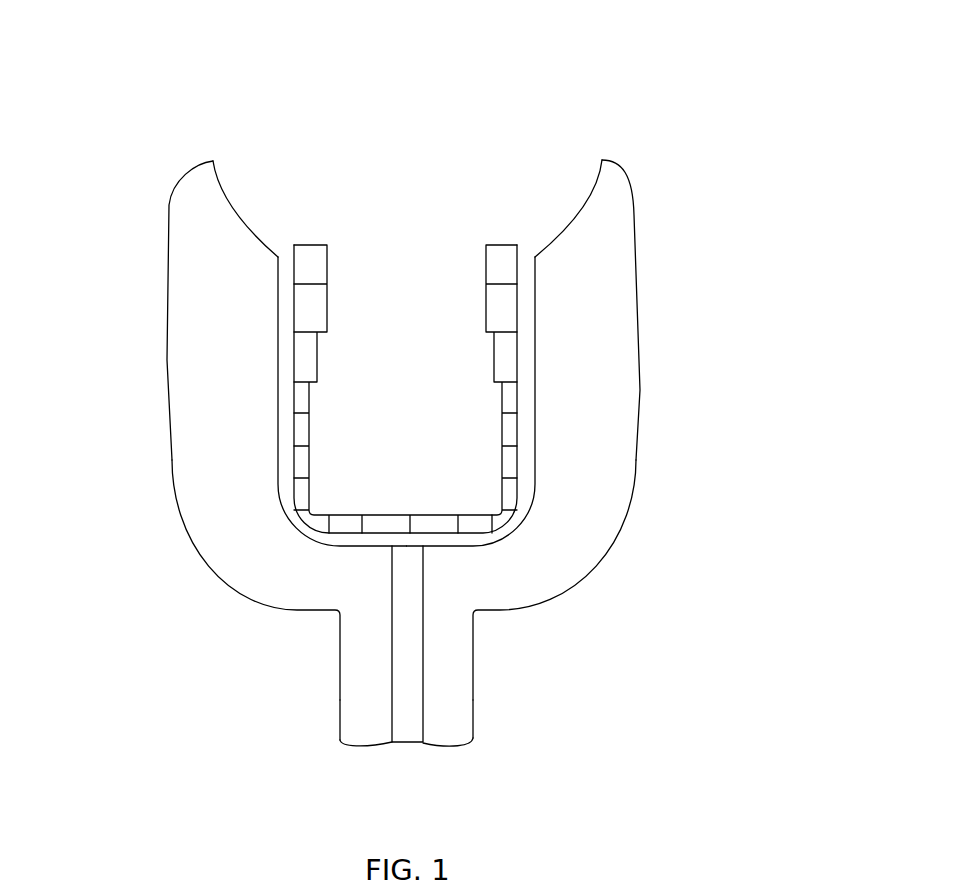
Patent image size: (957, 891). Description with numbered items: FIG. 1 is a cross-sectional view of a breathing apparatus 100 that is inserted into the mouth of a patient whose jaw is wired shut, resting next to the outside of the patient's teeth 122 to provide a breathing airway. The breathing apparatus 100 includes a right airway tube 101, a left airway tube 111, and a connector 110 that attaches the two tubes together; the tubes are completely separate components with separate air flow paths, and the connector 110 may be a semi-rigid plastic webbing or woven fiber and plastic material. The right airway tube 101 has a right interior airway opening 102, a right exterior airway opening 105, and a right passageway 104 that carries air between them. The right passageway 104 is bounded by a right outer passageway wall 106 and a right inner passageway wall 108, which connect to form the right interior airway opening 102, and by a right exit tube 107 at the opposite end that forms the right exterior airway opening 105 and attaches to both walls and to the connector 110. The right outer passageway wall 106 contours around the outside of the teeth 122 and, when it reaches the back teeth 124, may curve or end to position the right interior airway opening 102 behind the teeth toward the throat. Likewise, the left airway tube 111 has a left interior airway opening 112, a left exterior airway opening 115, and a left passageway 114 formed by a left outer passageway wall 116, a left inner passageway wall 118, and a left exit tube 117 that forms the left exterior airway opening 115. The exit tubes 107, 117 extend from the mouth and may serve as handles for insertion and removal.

The breathing apparatus 100 is at (408, 418).
The right airway tube 101 is at (226, 445).
The right interior airway opening 102 is at (256, 190).
The right passageway 104 is at (198, 417).
The right exterior airway opening 105 is at (362, 764).
The right outer passageway wall 106 is at (172, 463).
The right exit tube 107 is at (340, 718).
The right inner passageway wall 108 is at (278, 302).
The connector 110 is at (408, 597).
The left airway tube 111 is at (590, 444).
The left interior airway opening 112 is at (558, 190).
The left passageway 114 is at (600, 263).
The left exterior airway opening 115 is at (454, 768).
The left outer passageway wall 116 is at (642, 372).
The left exit tube 117 is at (473, 723).
The left inner passageway wall 118 is at (535, 337).
The patient's teeth 122 is at (462, 334).
The back teeth 124 is at (503, 265).